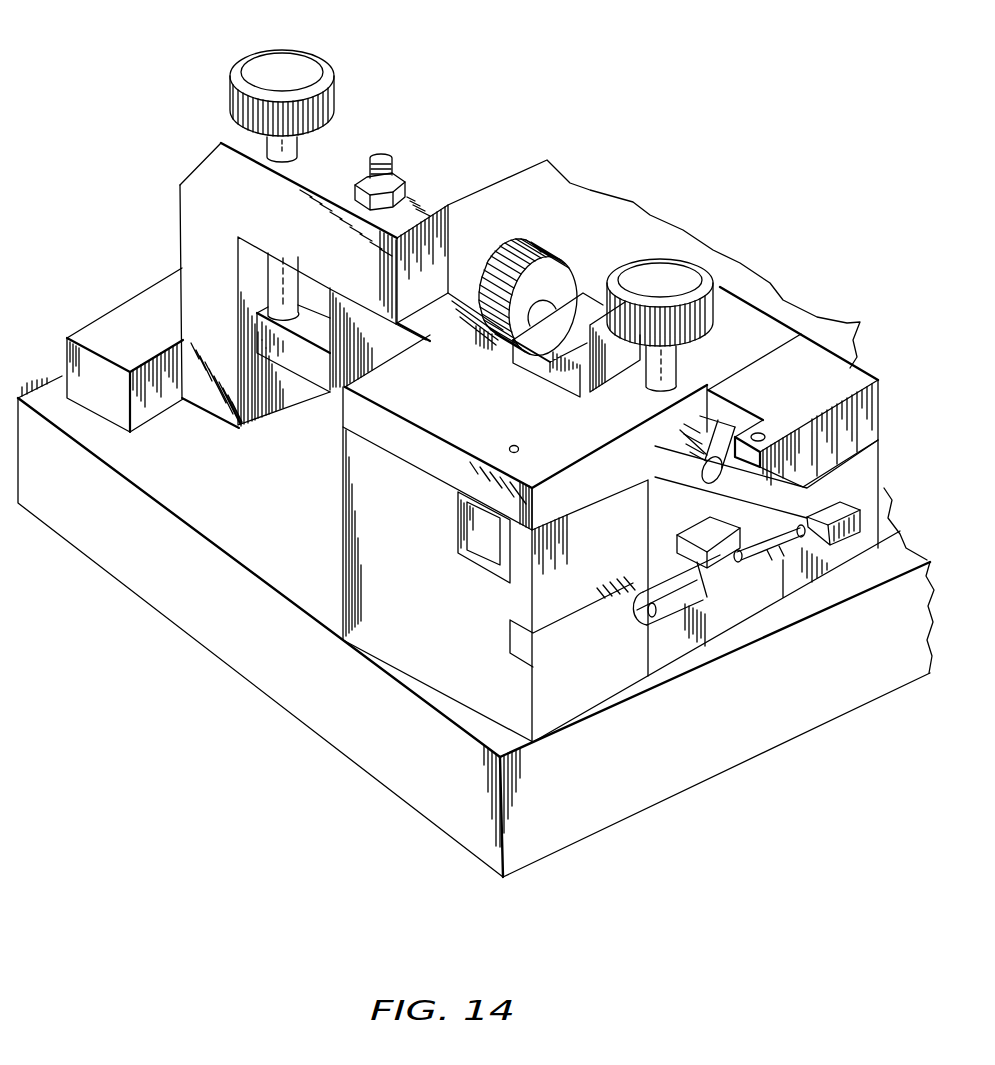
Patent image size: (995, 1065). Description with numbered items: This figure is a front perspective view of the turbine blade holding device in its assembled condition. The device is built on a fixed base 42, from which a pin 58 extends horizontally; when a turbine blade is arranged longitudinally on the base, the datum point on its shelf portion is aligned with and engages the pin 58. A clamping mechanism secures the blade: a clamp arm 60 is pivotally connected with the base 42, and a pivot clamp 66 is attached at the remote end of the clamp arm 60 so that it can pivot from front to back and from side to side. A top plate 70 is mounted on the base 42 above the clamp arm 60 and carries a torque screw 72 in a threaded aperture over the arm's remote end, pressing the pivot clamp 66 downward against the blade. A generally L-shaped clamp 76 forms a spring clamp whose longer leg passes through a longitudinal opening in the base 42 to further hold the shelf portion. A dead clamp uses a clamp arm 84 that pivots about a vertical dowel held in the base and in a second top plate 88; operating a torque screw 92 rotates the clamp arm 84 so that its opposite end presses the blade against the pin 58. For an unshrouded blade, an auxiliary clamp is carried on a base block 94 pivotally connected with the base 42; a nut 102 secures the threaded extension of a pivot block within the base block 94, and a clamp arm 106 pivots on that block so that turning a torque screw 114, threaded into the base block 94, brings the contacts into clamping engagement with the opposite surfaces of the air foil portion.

The fixed base 42 is at (365, 540).
The pin 58 is at (743, 562).
The clamp arm 60 is at (473, 546).
The pivot clamp 66 is at (714, 426).
The top plate 70 is at (350, 413).
The torque screw 72 is at (686, 274).
The L-shaped clamp 76 is at (664, 606).
The clamp arm 84 is at (835, 513).
The second top plate 88 is at (870, 399).
The torque screw 92 is at (537, 250).
The base block 94 is at (146, 299).
The nut 102 is at (395, 183).
The clamp arm 106 is at (307, 371).
The torque screw 114 is at (281, 61).